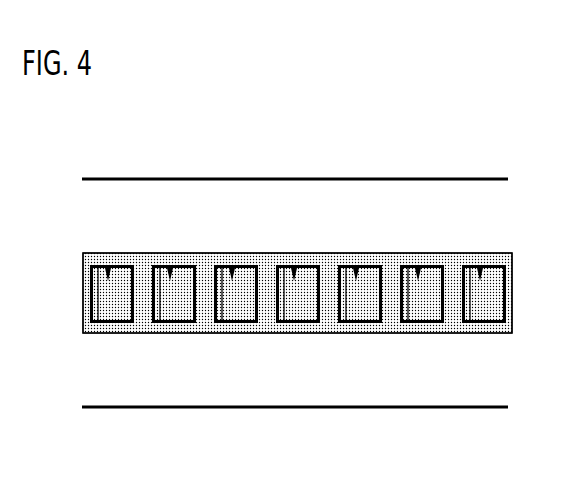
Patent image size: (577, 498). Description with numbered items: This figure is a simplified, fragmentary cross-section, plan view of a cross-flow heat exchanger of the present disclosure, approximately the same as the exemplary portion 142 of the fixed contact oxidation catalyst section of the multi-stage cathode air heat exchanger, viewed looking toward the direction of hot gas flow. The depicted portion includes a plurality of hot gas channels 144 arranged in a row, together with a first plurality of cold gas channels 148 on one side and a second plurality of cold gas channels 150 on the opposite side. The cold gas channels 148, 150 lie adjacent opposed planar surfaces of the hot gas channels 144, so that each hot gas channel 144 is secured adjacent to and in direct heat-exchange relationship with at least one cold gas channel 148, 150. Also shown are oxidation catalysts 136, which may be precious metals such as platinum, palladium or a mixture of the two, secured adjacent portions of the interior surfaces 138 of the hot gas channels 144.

The oxidation catalysts 136 is at (512, 301).
The interior surfaces 138 is at (470, 302).
The exemplary portion 142 is at (458, 156).
The hot air channels 144 is at (294, 266).
The first plurality of cold air channels 148 is at (487, 205).
The second plurality of cold air channels 150 is at (486, 376).